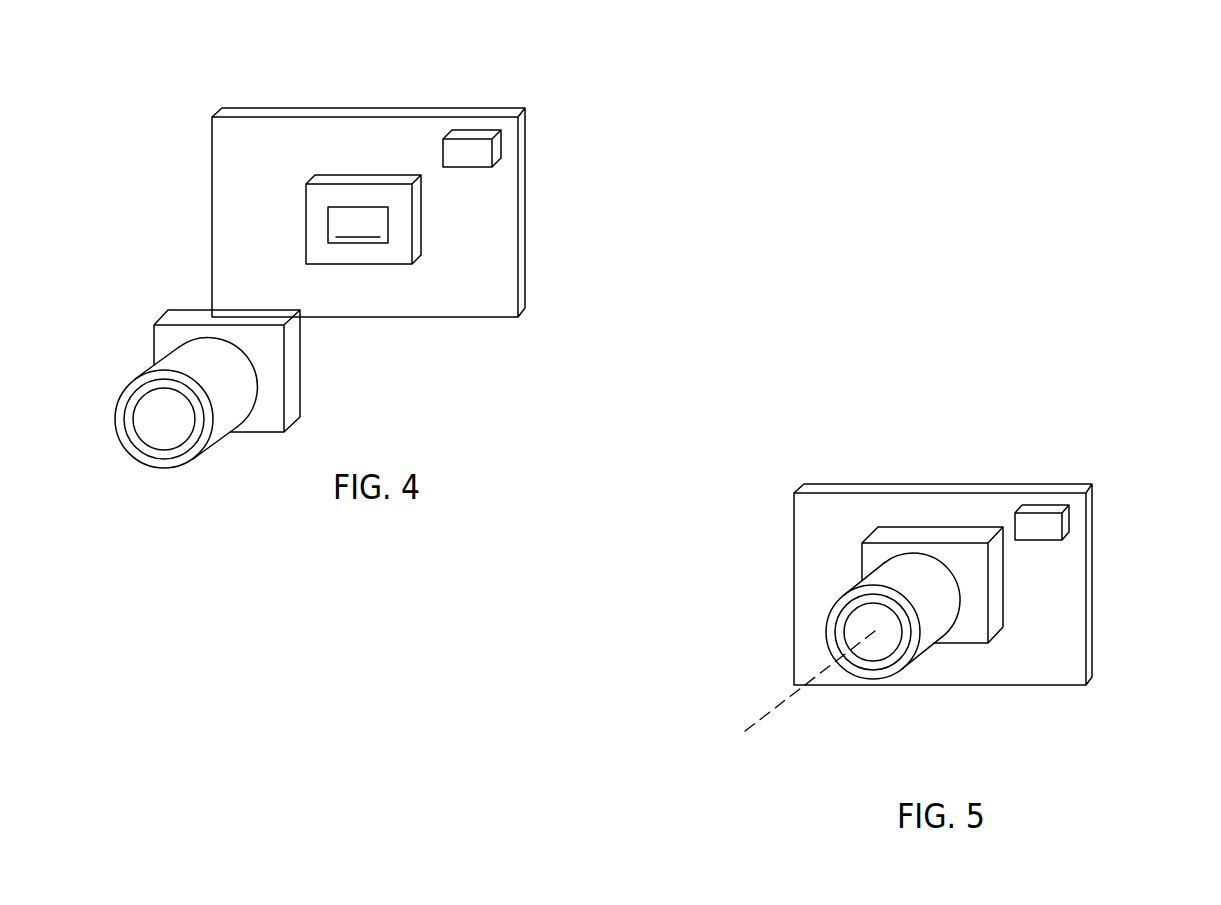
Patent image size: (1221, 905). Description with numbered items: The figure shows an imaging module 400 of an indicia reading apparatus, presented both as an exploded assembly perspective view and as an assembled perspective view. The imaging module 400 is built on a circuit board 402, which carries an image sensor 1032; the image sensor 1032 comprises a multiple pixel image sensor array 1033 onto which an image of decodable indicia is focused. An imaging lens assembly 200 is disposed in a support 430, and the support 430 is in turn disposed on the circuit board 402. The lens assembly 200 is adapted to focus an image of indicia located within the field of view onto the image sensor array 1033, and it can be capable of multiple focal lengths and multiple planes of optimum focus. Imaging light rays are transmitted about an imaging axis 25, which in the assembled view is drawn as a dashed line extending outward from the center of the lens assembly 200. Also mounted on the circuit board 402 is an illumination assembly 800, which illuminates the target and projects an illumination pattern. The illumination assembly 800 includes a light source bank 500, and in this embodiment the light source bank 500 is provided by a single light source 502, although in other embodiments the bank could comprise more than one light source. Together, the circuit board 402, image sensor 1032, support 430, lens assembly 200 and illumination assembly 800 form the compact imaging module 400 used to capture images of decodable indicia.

In FIG. 4, the imaging module 400 is at (218, 87).
In FIG. 5, the imaging module 400 is at (839, 453).
In FIG. 4, the circuit board 402 is at (495, 298).
In FIG. 4, the single light source 502 is at (472, 143).
In FIG. 5, the single light source 502 is at (1035, 520).
In FIG. 4, the light source bank 500 is at (553, 217).
In FIG. 5, the light source bank 500 is at (1121, 593).
In FIG. 4, the illumination assembly 800 is at (474, 182).
In FIG. 5, the illumination assembly 800 is at (1043, 558).
In FIG. 4, the image sensor 1032 is at (388, 258).
In FIG. 4, the multiple pixel image sensor array 1033 is at (358, 225).
In FIG. 4, the support 430 is at (178, 362).
In FIG. 5, the support 430 is at (980, 633).
In FIG. 4, the imaging lens assembly 200 is at (155, 433).
In FIG. 5, the imaging lens assembly 200 is at (882, 650).
In FIG. 5, the imaging axis 25 is at (765, 715).